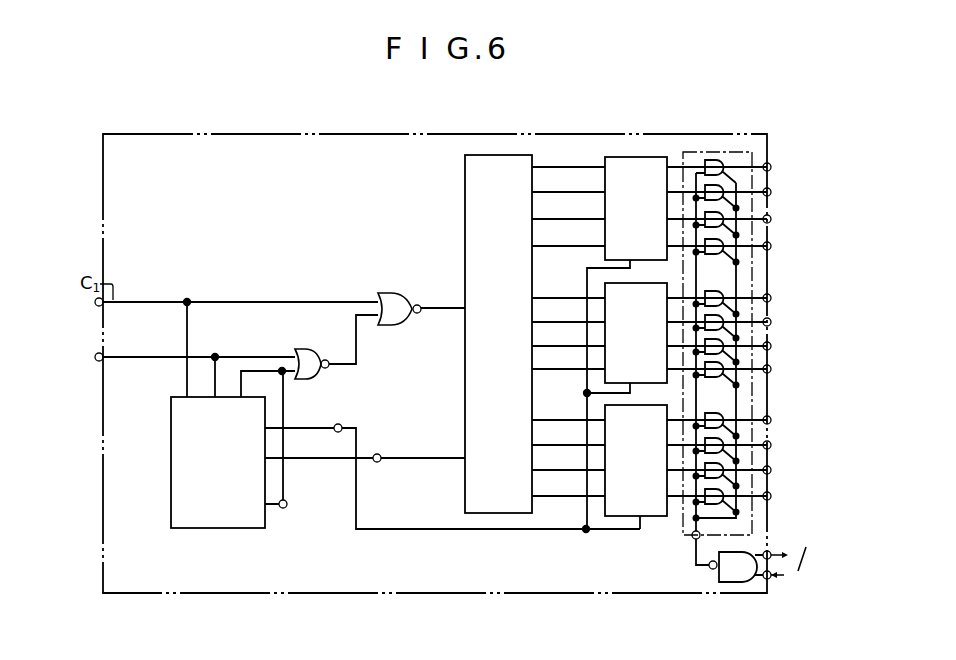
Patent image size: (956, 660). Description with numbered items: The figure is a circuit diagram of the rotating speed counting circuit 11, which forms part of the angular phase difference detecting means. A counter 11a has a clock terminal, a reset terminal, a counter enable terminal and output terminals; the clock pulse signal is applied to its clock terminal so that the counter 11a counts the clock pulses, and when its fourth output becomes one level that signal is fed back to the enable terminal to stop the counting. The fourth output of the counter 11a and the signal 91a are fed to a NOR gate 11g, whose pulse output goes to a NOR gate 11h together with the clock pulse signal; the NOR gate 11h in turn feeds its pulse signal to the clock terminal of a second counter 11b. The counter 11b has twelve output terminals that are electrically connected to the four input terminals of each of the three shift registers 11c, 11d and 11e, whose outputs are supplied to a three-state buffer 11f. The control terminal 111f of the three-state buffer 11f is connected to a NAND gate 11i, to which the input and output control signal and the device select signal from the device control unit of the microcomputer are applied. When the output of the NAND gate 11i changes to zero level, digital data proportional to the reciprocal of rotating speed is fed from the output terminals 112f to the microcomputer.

The rotating speed counting circuit 11 is at (361, 134).
The counter 11a is at (220, 529).
The counter 11b is at (519, 155).
The shift register 11c is at (632, 157).
The shift register 11d is at (605, 284).
The shift register 11e is at (605, 408).
The three-state buffer 11f is at (700, 152).
The NOR gate 11g is at (319, 374).
The NOR gate 11h is at (403, 303).
The NAND gate 11i is at (745, 583).
The signal 91a is at (126, 359).
The control terminal 111f is at (691, 539).
The output terminals 112f is at (769, 328).